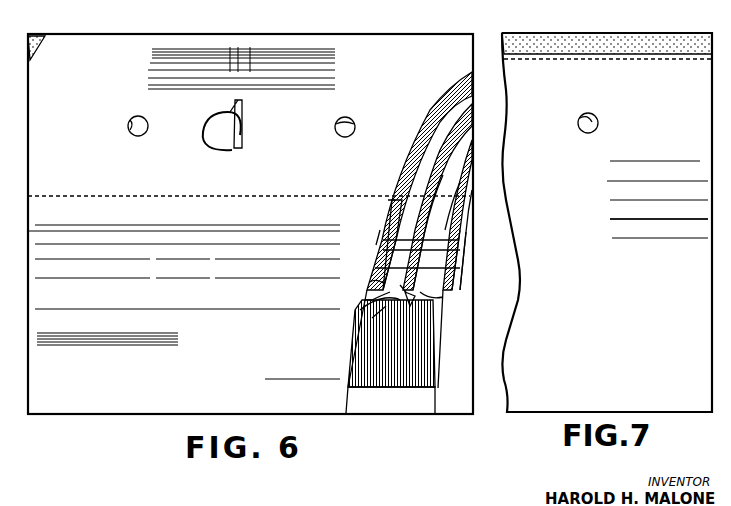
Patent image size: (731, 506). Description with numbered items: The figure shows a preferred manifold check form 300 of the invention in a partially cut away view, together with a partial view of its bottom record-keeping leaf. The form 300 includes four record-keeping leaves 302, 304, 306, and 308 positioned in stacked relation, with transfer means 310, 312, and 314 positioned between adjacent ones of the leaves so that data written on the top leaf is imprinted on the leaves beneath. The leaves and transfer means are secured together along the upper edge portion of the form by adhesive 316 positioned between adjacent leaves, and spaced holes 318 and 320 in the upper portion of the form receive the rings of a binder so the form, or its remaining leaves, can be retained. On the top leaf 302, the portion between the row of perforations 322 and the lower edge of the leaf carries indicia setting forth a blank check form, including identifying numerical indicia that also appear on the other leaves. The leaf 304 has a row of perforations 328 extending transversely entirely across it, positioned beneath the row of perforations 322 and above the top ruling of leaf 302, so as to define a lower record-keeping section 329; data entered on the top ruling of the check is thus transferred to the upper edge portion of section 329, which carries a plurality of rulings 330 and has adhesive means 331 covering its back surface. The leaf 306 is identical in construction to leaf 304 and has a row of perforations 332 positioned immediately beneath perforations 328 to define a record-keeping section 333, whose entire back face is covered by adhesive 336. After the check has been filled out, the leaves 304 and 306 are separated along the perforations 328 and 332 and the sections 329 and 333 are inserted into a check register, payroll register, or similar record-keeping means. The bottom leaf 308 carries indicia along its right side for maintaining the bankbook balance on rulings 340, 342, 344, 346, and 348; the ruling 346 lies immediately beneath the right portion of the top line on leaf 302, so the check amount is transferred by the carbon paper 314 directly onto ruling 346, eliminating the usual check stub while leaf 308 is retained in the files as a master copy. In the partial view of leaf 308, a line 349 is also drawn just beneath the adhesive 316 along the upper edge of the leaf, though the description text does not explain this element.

In FIG. 6, the manifold check form 300 is at (168, 458).
In FIG. 6, the record-keeping leaf 302 is at (132, 405).
In FIG. 6, the record-keeping leaf 304 is at (365, 306).
In FIG. 6, the record-keeping leaf 306 is at (423, 326).
In FIG. 6, the record-keeping leaf 308 is at (450, 396).
In FIG. 7, the record-keeping leaf 308 is at (648, 394).
In FIG. 6, the transfer means 310 is at (362, 300).
In FIG. 6, the transfer means 312 is at (380, 265).
In FIG. 6, the transfer means 314 is at (412, 368).
In FIG. 6, the adhesive 316 is at (34, 36).
In FIG. 7, the adhesive 316 is at (601, 42).
In FIG. 6, the hole 318 is at (135, 116).
In FIG. 6, the hole 320 is at (345, 117).
In FIG. 7, the hole 320 is at (586, 114).
In FIG. 6, the row of perforations 322 is at (116, 194).
In FIG. 6, the row of perforations 328 is at (400, 212).
In FIG. 6, the record-keeping section 329 is at (402, 206).
In FIG. 6, the rulings 330 is at (392, 250).
In FIG. 6, the adhesive means 331 is at (372, 318).
In FIG. 6, the row of perforations 332 is at (412, 175).
In FIG. 6, the record-keeping section 333 is at (412, 297).
In FIG. 6, the adhesive 336 is at (440, 300).
In FIG. 6, the ruling 340 is at (470, 164).
In FIG. 6, the ruling 342 is at (464, 180).
In FIG. 6, the ruling 344 is at (462, 200).
In FIG. 6, the ruling 346 is at (466, 224).
In FIG. 7, the ruling 346 is at (694, 214).
In FIG. 6, the ruling 348 is at (466, 240).
In FIG. 7, the perforation line 349 is at (697, 58).